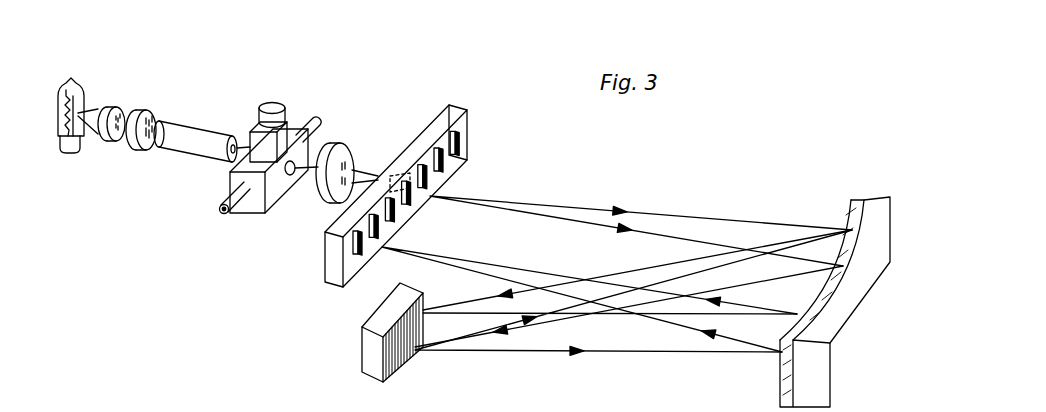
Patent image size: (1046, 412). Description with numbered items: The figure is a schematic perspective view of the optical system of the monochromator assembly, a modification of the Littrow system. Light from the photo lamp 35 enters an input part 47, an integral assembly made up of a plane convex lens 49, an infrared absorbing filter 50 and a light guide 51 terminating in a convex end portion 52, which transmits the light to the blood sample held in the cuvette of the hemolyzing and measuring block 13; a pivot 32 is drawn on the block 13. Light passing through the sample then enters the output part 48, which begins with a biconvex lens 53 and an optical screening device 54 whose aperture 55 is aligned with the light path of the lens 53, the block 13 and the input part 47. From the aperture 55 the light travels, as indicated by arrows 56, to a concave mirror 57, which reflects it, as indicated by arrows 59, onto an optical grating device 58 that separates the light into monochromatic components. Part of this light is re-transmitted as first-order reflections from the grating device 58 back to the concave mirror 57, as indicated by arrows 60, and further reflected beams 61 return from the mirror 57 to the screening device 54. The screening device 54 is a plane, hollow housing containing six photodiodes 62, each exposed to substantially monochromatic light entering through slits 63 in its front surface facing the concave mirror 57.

The photo lamp 35 is at (72, 80).
The plane convex lens 49 is at (105, 108).
The infrared absorbing filter 50 is at (142, 158).
The input part 47 is at (195, 139).
The light guide 51 is at (195, 150).
The convex end portion 52 is at (253, 137).
The pivot pin 32 is at (290, 129).
The hemolyzing and measuring block 13 is at (259, 214).
The biconvex lens 53 is at (342, 150).
The optical screening device 54 is at (401, 180).
The photodiodes 62 is at (348, 255).
The slits 63 is at (468, 153).
The aperture 55 is at (404, 197).
The arrows 56 is at (632, 226).
The output part 48 is at (700, 205).
The concave mirror 57 is at (846, 218).
The reflected beam 61 is at (716, 300).
The arrows 59 is at (500, 296).
The arrows 60 is at (530, 318).
The optical grating device 58 is at (370, 350).